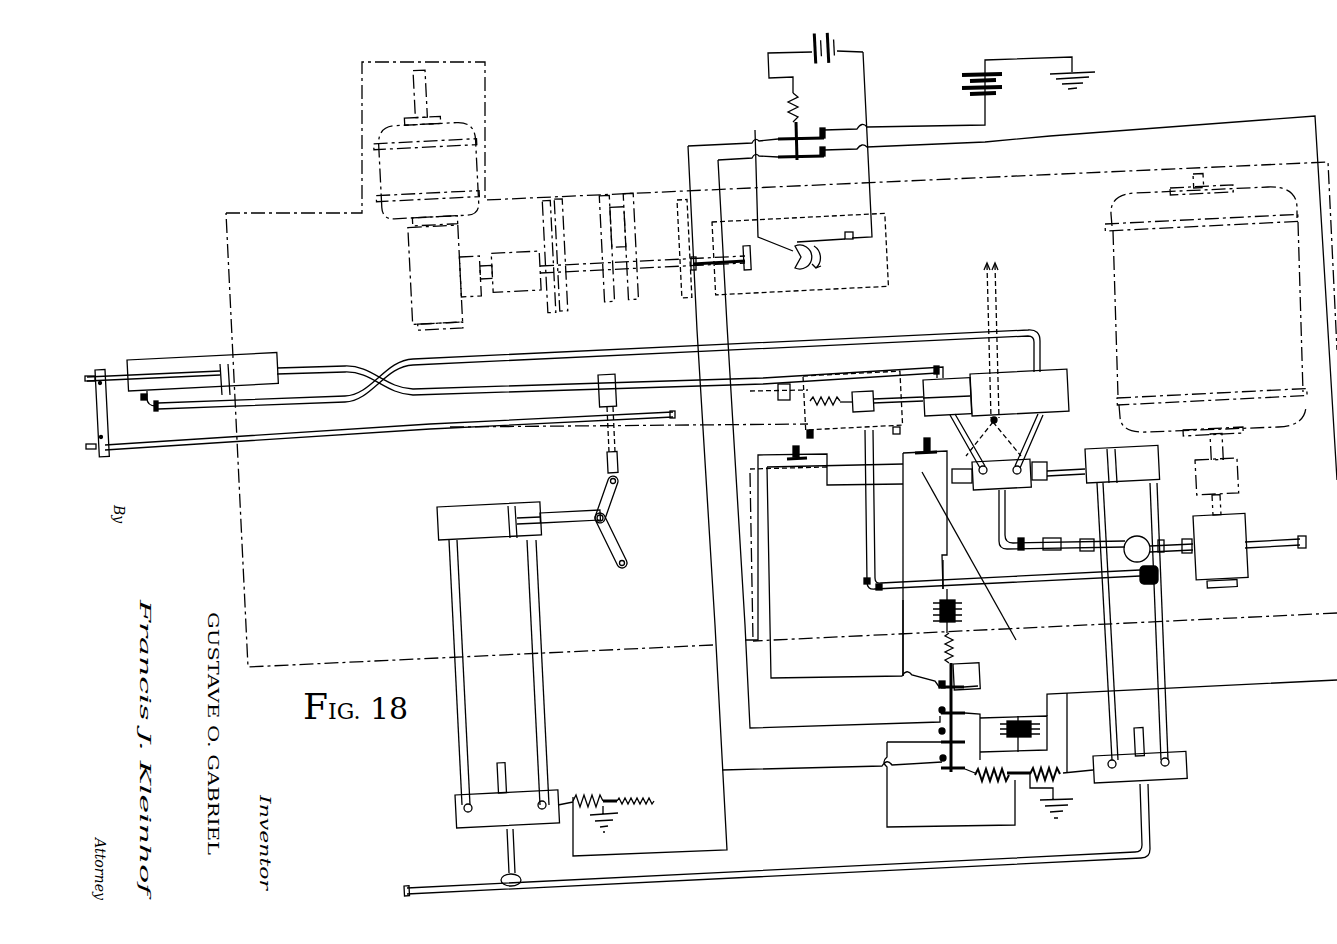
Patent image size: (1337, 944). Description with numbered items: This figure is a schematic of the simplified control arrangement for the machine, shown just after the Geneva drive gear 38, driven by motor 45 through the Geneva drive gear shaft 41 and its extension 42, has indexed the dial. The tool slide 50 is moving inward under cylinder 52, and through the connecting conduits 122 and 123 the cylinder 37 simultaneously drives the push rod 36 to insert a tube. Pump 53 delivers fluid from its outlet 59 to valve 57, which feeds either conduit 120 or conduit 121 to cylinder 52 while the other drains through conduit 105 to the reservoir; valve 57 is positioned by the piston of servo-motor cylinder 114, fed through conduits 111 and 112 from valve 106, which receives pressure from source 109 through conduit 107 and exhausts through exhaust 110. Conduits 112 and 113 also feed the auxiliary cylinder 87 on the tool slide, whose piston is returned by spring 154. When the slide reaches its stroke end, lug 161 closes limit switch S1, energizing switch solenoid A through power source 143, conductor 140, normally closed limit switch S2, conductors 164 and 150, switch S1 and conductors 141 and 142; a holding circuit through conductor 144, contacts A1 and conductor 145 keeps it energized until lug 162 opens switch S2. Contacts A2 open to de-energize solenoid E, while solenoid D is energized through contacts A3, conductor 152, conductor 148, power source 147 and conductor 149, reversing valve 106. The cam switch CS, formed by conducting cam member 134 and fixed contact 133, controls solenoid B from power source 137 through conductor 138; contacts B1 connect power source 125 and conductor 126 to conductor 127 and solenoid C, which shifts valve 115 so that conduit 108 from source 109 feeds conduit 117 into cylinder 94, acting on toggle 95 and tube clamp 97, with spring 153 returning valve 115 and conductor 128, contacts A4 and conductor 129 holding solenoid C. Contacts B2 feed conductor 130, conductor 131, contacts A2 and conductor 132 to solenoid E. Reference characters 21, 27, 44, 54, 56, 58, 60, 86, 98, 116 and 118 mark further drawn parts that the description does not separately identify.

The steering rod 21 is at (544, 428).
The link rod 27 is at (617, 438).
The push rod 36 is at (362, 438).
The cylinder 37 is at (196, 362).
The Geneva drive gear 38 is at (622, 192).
The Geneva drive gear shaft 41 is at (667, 267).
The shaft extension 42 is at (743, 270).
The engine block 44 is at (420, 271).
The Geneva gear driving motor 45 is at (427, 170).
The tool slide 50 is at (893, 387).
The cylinder 52 is at (1073, 388).
The pump 53 is at (1250, 567).
The reservoir tank 54 is at (1262, 302).
The pump shaft 56 is at (1274, 540).
The valve 57 is at (990, 485).
The pipe 58 is at (1072, 466).
The pump outlet 59 is at (1008, 528).
The check valve 60 is at (1142, 534).
The collar 86 is at (779, 383).
The auxiliary cylinder 87 is at (863, 390).
The cylinder 94 is at (487, 504).
The toggle 95 is at (612, 503).
The tube clamp 97 is at (618, 463).
The slide block 98 is at (618, 400).
The conduit 105 is at (1000, 296).
The valve 106 is at (1187, 763).
The conduit 107 is at (1151, 812).
The conduit 108 is at (517, 856).
The pressure source 109 is at (432, 875).
The exhaust 110 is at (1153, 707).
The conduit 111 is at (1113, 673).
The conduit 112 is at (1166, 668).
The conduit 113 is at (859, 574).
The servo-motor cylinder 114 is at (1149, 462).
The valve 115 is at (455, 814).
The port 116 is at (516, 740).
The conduit 117 is at (463, 694).
The pipe 118 is at (541, 692).
The conduit 120 is at (1036, 439).
The conduit 121 is at (983, 447).
The connecting conduit 122 is at (630, 325).
The connecting conduit 123 is at (538, 378).
The power source 125 is at (960, 76).
The conductor 126 is at (938, 124).
The conductor 127 is at (713, 576).
The conductor 128 is at (830, 768).
The conductor 129 is at (1304, 658).
The conductor 130 is at (951, 142).
The conductor 131 is at (728, 334).
The conductor 132 is at (1067, 734).
The fixed contact 133 is at (844, 237).
The conducting cam member 134 is at (788, 272).
The power source 137 is at (839, 36).
The conductor 138 is at (758, 224).
The conductor 140 is at (947, 587).
The conductor 141 is at (772, 556).
The conductor 142 is at (981, 663).
The power source 143 is at (960, 606).
The conductor 144 is at (903, 622).
The conductor 145 is at (970, 686).
The power source 147 is at (1030, 740).
The conductor 148 is at (974, 777).
The conductor 149 is at (1000, 714).
The conductor 150 is at (842, 490).
The conductor 152 is at (932, 832).
The spring 153 is at (628, 796).
The spring 154 is at (820, 398).
The lug 161 is at (814, 433).
The lug 162 is at (898, 434).
The conductor 164 is at (936, 476).
The switch solenoid A is at (952, 652).
The contacts A1 is at (935, 686).
The contacts A2 is at (935, 714).
The contacts A3 is at (938, 741).
The contacts A4 is at (938, 766).
The solenoid B is at (802, 104).
The contacts B1 is at (825, 130).
The contacts B2 is at (828, 153).
The solenoid C is at (590, 795).
The cam switch CS is at (794, 248).
The solenoid D is at (993, 780).
The solenoid E is at (1062, 778).
The limit switch S1 is at (786, 452).
The limit switch S2 is at (930, 446).